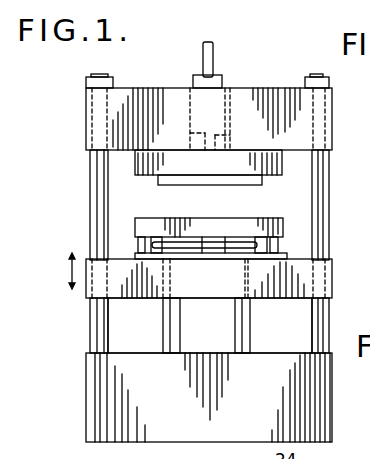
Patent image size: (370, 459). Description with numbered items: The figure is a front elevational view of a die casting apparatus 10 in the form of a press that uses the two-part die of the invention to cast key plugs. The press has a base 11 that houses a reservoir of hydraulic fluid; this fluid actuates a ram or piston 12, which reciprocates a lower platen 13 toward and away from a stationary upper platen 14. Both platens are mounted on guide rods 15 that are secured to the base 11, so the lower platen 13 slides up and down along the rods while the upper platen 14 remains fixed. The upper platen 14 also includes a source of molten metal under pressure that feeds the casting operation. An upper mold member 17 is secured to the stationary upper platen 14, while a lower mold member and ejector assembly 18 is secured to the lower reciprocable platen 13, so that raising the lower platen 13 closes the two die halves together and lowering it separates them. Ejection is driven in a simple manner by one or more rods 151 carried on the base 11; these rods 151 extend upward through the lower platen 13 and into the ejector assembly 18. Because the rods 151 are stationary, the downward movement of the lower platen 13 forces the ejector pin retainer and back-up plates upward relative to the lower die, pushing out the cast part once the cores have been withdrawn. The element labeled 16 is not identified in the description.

The die casting apparatus 10 is at (82, 178).
The base 11 is at (92, 402).
The ram or piston 12 is at (213, 341).
The lower platen 13 is at (330, 277).
The upper platen 14 is at (333, 118).
The guide rods 15 is at (95, 203).
The rods 151 is at (163, 320).
The ram 16 is at (225, 80).
The upper mold member 17 is at (210, 183).
The lower mold member and ejector assembly 18 is at (203, 215).